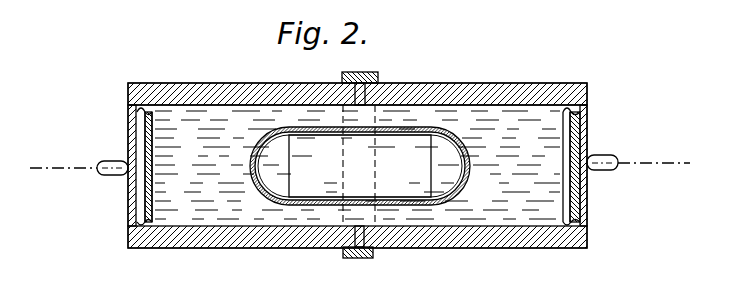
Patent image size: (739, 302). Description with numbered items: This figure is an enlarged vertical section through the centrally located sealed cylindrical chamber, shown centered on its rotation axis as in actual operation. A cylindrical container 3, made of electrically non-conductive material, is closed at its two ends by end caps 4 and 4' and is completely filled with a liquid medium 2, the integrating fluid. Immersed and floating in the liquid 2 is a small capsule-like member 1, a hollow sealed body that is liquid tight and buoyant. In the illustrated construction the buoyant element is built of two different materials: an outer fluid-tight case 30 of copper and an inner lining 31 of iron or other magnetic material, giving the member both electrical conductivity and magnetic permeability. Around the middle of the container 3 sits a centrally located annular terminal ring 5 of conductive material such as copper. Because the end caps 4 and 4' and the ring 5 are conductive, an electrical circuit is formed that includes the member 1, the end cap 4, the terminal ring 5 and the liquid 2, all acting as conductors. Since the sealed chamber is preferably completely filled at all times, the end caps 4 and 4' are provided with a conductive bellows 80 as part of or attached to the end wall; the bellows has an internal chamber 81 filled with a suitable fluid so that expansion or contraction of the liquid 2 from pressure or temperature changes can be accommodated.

The capsule-like member 1 is at (454, 137).
The liquid medium 2 is at (382, 166).
The cylindrical container 3 is at (553, 247).
The end cap 4 is at (108, 165).
The end cap 4' is at (611, 165).
The annular terminal ring 5 is at (378, 74).
The outer fluid-tight case 30 is at (450, 200).
The inner lining 31 is at (326, 191).
The bellows 80 is at (563, 193).
The internal chamber 81 is at (570, 160).